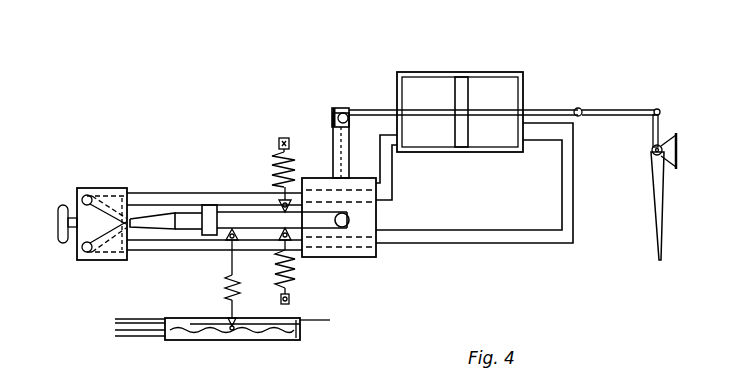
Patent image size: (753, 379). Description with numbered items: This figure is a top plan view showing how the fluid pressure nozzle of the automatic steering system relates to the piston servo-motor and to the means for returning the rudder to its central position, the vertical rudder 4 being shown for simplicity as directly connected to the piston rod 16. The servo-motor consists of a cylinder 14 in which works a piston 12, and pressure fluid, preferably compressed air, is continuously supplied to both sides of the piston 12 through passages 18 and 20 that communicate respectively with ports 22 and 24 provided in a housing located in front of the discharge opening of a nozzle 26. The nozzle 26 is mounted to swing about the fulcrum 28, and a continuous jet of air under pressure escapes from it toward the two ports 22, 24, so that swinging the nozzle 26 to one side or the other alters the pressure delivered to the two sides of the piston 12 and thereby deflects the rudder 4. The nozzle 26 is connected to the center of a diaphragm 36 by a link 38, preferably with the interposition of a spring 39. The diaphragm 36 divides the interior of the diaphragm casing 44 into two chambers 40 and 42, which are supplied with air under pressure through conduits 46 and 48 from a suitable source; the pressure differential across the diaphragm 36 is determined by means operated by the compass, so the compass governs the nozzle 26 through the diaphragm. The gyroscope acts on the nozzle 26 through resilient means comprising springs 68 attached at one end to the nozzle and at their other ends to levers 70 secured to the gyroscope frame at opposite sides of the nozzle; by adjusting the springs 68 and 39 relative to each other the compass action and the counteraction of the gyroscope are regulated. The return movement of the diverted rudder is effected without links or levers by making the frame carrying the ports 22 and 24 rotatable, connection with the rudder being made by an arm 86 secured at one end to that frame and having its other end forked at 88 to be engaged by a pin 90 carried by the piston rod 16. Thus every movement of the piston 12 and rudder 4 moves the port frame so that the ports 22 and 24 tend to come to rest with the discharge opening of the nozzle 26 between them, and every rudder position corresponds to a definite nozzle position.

The vertical rudder 4 is at (661, 200).
The piston 12 is at (462, 87).
The cylinder 14 is at (425, 95).
The piston rod 16 is at (363, 110).
The passage 18 is at (460, 237).
The passage 20 is at (387, 173).
The port 22 is at (78, 258).
The port 24 is at (85, 196).
The nozzle 26 is at (240, 220).
The fulcrum 28 is at (348, 227).
The diaphragm 36 is at (262, 325).
The link 38 is at (192, 312).
The spring 39 is at (225, 293).
The chamber 40 is at (330, 320).
The chamber 42 is at (227, 340).
The diaphragm casing 44 is at (293, 340).
The conduit 46 is at (128, 318).
The conduit 48 is at (129, 312).
The springs 68 is at (63, 205).
The levers 70 is at (280, 137).
The arm 86 is at (337, 167).
The fork 88 is at (333, 118).
The pin 90 is at (337, 109).